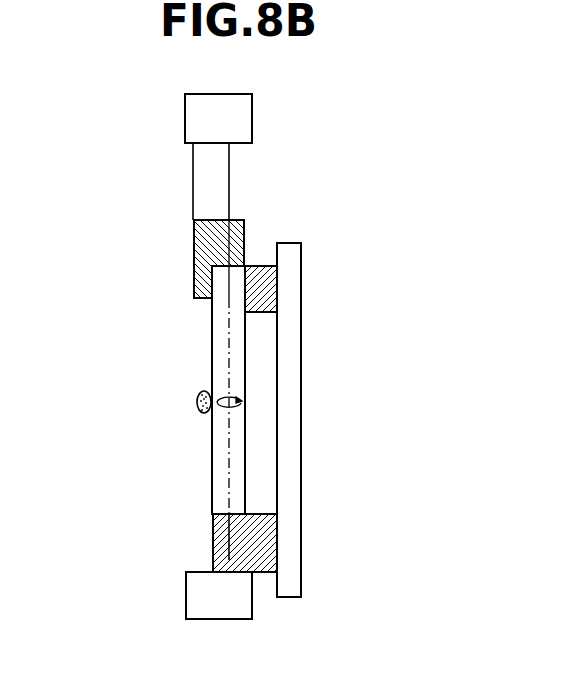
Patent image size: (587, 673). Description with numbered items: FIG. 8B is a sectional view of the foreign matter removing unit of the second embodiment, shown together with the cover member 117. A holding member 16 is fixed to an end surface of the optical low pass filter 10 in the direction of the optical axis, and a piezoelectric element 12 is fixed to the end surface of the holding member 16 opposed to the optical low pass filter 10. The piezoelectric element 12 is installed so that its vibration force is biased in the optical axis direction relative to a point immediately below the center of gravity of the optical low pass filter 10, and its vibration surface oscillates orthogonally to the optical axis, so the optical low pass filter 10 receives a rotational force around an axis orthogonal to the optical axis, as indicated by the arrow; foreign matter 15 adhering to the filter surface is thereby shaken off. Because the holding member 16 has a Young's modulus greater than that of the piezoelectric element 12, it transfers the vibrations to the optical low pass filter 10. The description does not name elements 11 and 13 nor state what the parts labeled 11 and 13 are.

The optical low pass filter 10 is at (215, 323).
The bearing 11 is at (276, 297).
The piezoelectric element 12 is at (200, 184).
The lower support member 13 is at (205, 593).
The foreign matter 15 is at (197, 403).
The holding member 16 is at (200, 248).
The cover member 117 is at (292, 258).